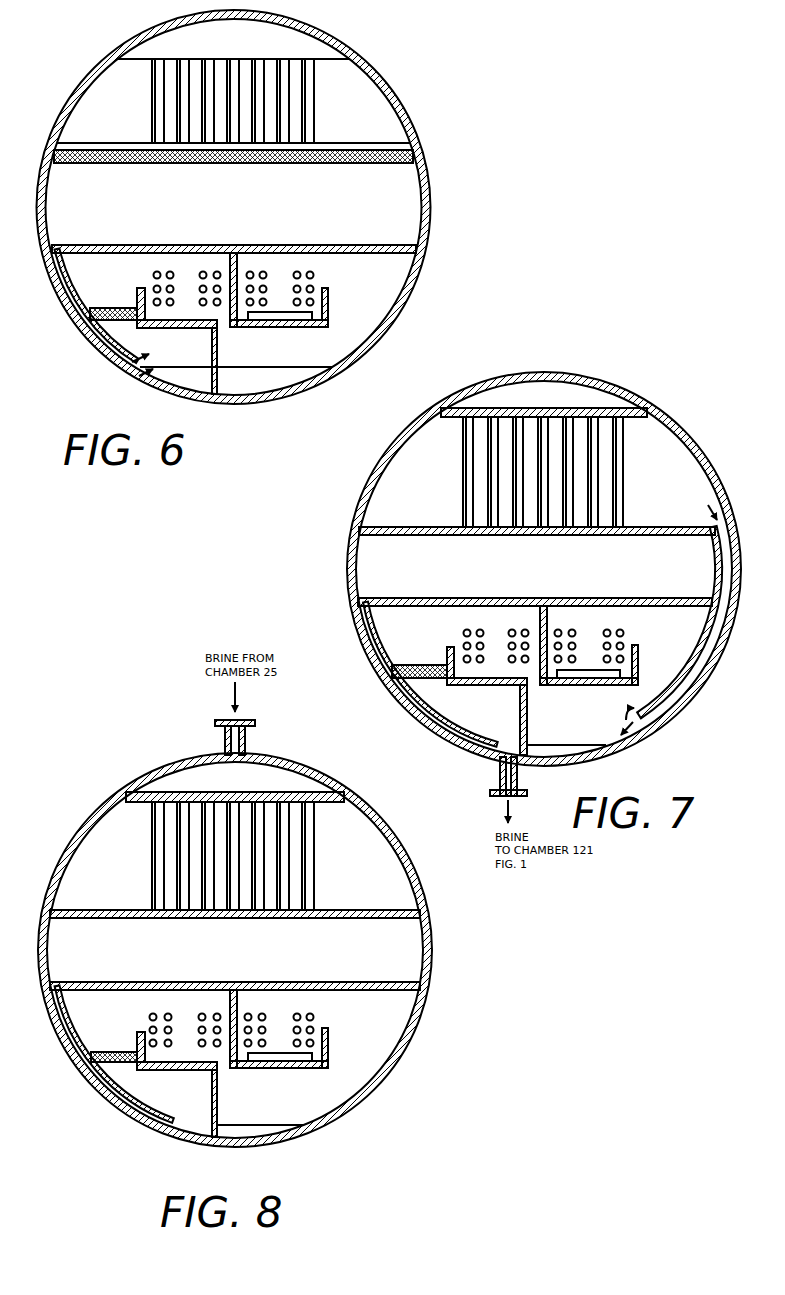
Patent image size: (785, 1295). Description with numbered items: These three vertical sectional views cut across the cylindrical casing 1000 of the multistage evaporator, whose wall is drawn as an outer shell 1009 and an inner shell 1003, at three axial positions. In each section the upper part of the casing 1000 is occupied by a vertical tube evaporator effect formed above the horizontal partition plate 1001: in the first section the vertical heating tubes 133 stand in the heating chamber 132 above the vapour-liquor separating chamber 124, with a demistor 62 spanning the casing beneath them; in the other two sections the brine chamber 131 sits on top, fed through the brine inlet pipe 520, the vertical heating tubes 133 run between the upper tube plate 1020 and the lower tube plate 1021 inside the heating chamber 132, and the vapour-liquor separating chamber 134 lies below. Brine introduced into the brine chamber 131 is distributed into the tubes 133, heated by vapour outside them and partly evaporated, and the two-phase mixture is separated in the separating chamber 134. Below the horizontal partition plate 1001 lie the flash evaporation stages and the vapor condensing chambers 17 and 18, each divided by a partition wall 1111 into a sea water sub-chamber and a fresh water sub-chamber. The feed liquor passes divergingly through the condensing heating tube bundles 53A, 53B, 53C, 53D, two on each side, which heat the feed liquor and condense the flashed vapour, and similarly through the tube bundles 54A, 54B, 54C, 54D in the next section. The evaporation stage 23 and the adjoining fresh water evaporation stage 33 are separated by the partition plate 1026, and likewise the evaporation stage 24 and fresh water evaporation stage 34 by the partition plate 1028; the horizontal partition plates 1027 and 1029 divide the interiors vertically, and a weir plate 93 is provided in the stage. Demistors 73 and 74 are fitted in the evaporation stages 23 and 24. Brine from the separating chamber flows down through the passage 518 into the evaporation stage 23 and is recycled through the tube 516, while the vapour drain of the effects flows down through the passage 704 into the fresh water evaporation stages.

In FIG. 6, the casing 1000 is at (165, 26).
In FIG. 7, the casing 1000 is at (605, 375).
In FIG. 8, the casing 1000 is at (160, 767).
In FIG. 6, the outer shell wall 1009 is at (323, 50).
In FIG. 6, the inner shell wall 1003 is at (407, 190).
In FIG. 6, the vertical heating tubes 133 is at (152, 115).
In FIG. 7, the vertical heating tubes 133 is at (463, 465).
In FIG. 8, the vertical heating tubes 133 is at (153, 853).
In FIG. 6, the heating chamber 132 is at (363, 114).
In FIG. 7, the heating chamber 132 is at (678, 494).
In FIG. 8, the heating chamber 132 is at (366, 877).
In FIG. 6, the demistor 62 is at (133, 165).
In FIG. 6, the vapour-liquor separating chamber 124 is at (246, 203).
In FIG. 6, the horizontal partition plate 1001 is at (345, 245).
In FIG. 7, the horizontal partition plate 1001 is at (650, 598).
In FIG. 8, the horizontal partition plate 1001 is at (340, 982).
In FIG. 6, the partition wall 1111 is at (238, 262).
In FIG. 7, the partition wall 1111 is at (497, 580).
In FIG. 8, the partition wall 1111 is at (225, 998).
In FIG. 6, the vapor condensing chamber 17 is at (83, 262).
In FIG. 7, the vapor condensing chamber 17 is at (380, 620).
In FIG. 6, the demistor 73 is at (112, 308).
In FIG. 7, the demistor 73 is at (410, 665).
In FIG. 6, the condensing heating tube bundle 53A is at (168, 271).
In FIG. 7, the condensing heating tube bundle 53A is at (478, 629).
In FIG. 6, the condensing heating tube bundle 53B is at (217, 271).
In FIG. 7, the condensing heating tube bundle 53B is at (525, 629).
In FIG. 6, the condensing heating tube bundle 53C is at (251, 271).
In FIG. 7, the condensing heating tube bundle 53C is at (559, 629).
In FIG. 6, the condensing heating tube bundle 53D is at (311, 271).
In FIG. 7, the condensing heating tube bundle 53D is at (621, 629).
In FIG. 6, the horizontal partition plate 1027 is at (329, 298).
In FIG. 7, the horizontal partition plate 1027 is at (639, 656).
In FIG. 6, the passage 518 is at (83, 318).
In FIG. 6, the evaporation stage 23 is at (161, 353).
In FIG. 7, the evaporation stage 23 is at (469, 715).
In FIG. 6, the partition plate 1026 is at (195, 328).
In FIG. 7, the partition plate 1026 is at (500, 687).
In FIG. 6, the fresh water evaporation stage 33 is at (299, 353).
In FIG. 7, the fresh water evaporation stage 33 is at (594, 718).
In FIG. 6, the weir plate 93 is at (270, 382).
In FIG. 7, the brine chamber 131 is at (559, 401).
In FIG. 8, the brine chamber 131 is at (248, 784).
In FIG. 7, the upper tube plate 1020 is at (637, 417).
In FIG. 8, the upper tube plate 1020 is at (323, 802).
In FIG. 7, the lower tube plate 1021 is at (418, 527).
In FIG. 8, the lower tube plate 1021 is at (110, 910).
In FIG. 7, the vapour-liquor separating chamber 134 is at (558, 569).
In FIG. 8, the vapour-liquor separating chamber 134 is at (250, 949).
In FIG. 7, the passage 704 is at (677, 695).
In FIG. 7, the tube 516 is at (497, 775).
In FIG. 8, the brine inlet pipe 520 is at (225, 741).
In FIG. 8, the vapor condensing chamber 18 is at (72, 1007).
In FIG. 8, the demistor 74 is at (102, 1052).
In FIG. 8, the condensing heating tube bundle 54A is at (166, 1013).
In FIG. 8, the condensing heating tube bundle 54B is at (217, 1013).
In FIG. 8, the condensing heating tube bundle 54C is at (250, 1013).
In FIG. 8, the condensing heating tube bundle 54D is at (312, 1013).
In FIG. 8, the horizontal partition plate 1029 is at (329, 1047).
In FIG. 8, the evaporation stage 24 is at (158, 1100).
In FIG. 8, the partition plate 1028 is at (190, 1070).
In FIG. 8, the fresh water evaporation stage 34 is at (291, 1102).